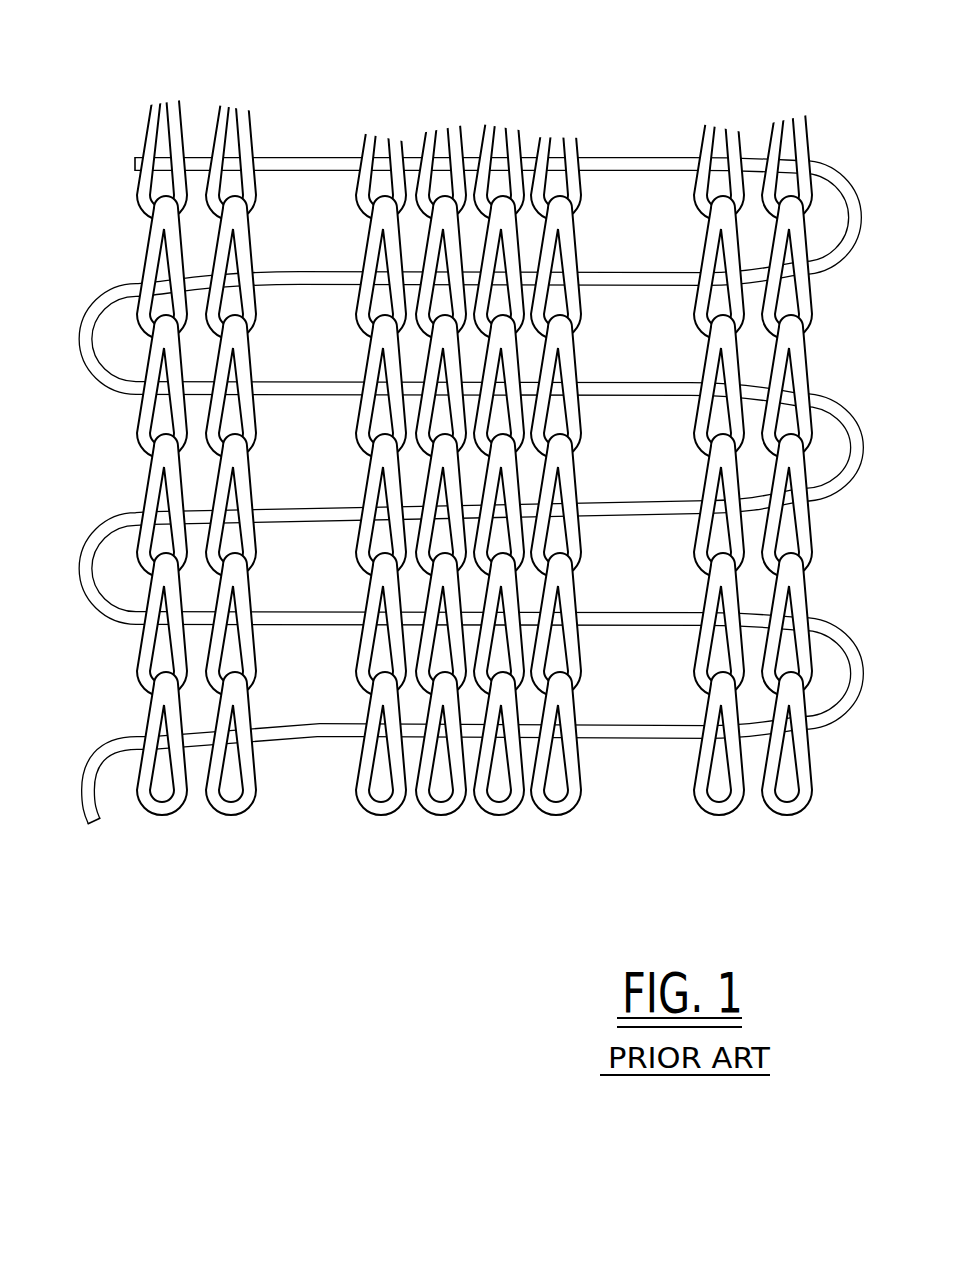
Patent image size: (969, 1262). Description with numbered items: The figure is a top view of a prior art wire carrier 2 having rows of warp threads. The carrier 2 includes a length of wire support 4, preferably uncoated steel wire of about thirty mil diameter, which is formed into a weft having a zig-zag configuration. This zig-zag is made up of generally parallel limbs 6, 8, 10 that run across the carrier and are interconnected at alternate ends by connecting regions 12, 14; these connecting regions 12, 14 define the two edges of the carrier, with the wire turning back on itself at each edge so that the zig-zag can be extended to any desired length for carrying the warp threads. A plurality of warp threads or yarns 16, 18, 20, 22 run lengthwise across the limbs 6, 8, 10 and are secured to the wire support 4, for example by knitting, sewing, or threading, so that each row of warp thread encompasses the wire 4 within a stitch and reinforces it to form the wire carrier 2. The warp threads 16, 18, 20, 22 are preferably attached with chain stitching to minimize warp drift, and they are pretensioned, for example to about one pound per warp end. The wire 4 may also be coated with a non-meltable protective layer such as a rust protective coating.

The wire carrier 2 is at (467, 442).
The wire support 4 is at (655, 156).
The limb 6 is at (650, 740).
The limb 8 is at (664, 626).
The limb 10 is at (665, 516).
The connecting region 12 is at (81, 596).
The connecting region 14 is at (852, 700).
The warp thread 16 is at (178, 813).
The warp thread 18 is at (387, 810).
The warp thread 20 is at (497, 810).
The warp thread 22 is at (730, 810).